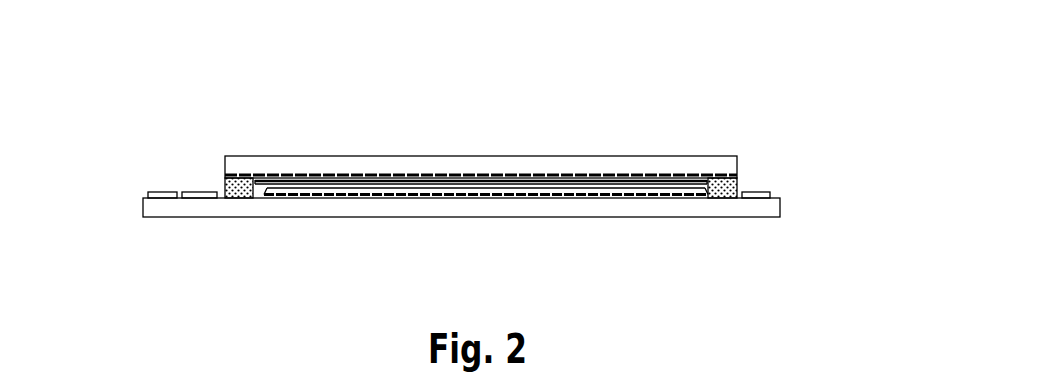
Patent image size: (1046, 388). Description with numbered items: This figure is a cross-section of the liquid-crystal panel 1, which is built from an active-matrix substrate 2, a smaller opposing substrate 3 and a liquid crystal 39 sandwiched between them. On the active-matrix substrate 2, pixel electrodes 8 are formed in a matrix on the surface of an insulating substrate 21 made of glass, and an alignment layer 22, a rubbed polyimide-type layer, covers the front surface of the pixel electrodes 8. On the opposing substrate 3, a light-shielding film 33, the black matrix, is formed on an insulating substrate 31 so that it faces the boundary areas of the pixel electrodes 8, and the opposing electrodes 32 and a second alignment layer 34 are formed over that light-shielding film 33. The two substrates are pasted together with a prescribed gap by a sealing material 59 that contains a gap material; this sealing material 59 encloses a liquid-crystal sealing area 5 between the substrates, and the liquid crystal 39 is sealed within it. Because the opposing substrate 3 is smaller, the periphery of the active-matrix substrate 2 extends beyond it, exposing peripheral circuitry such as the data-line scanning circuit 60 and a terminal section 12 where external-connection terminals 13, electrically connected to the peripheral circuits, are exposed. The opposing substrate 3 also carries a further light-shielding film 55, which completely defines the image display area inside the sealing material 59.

The liquid-crystal panel 1 is at (667, 66).
The active-matrix substrate 2 is at (770, 217).
The opposing substrate 3 is at (493, 163).
The liquid-crystal sealing area 5 is at (416, 189).
The pixel electrodes 8 is at (501, 194).
The terminal section 12 is at (163, 192).
The external-connection terminals 13 is at (121, 176).
The insulating substrate 21 is at (683, 207).
The alignment layer 22 is at (370, 196).
The insulating substrate 31 is at (665, 156).
The opposing electrodes 32 is at (565, 181).
The light-shielding film 33 is at (388, 174).
The alignment layer 34 is at (582, 184).
The liquid crystal 39 is at (612, 195).
The light-shielding film 55 is at (282, 176).
The sealing material 59 is at (246, 198).
The data-line scanning circuit 60 is at (196, 192).